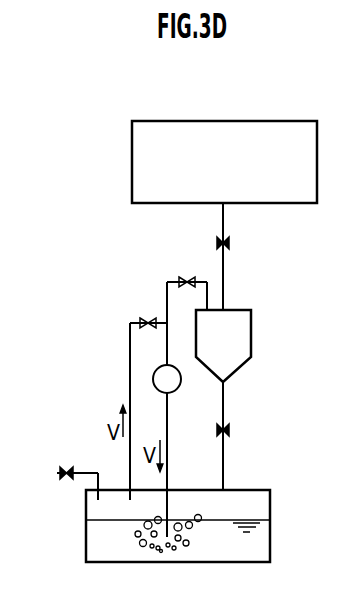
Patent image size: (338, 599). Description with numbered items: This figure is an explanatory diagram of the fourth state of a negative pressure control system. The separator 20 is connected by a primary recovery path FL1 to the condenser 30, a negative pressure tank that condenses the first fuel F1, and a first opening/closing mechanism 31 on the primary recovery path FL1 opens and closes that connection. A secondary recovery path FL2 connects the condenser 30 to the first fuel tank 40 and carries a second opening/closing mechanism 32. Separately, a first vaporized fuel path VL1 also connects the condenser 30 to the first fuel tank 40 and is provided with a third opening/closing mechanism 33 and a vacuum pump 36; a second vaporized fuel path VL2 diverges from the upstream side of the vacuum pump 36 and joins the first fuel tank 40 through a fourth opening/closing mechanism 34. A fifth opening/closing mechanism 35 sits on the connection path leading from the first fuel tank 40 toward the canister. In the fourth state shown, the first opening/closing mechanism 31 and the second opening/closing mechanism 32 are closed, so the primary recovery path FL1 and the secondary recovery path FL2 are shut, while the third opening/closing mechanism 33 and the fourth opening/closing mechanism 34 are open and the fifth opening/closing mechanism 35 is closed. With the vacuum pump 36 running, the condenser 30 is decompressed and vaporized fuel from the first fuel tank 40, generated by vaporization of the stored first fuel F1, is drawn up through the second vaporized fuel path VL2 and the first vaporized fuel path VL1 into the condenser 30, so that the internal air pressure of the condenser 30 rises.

The separator 20 is at (272, 119).
The condenser 30 is at (233, 310).
The first opening/closing mechanism 31 is at (229, 242).
The second opening/closing mechanism 32 is at (229, 428).
The third opening/closing mechanism 33 is at (181, 279).
The fourth opening/closing mechanism 34 is at (140, 321).
The fifth opening/closing mechanism 35 is at (63, 469).
The vacuum pump 36 is at (158, 368).
The first fuel tank 40 is at (248, 490).
The primary recovery path FL1 is at (225, 283).
The secondary recovery path FL2 is at (225, 395).
The first vaporized fuel path VL1 is at (162, 396).
The second vaporized fuel path VL2 is at (130, 462).
The first fuel F1 is at (272, 552).